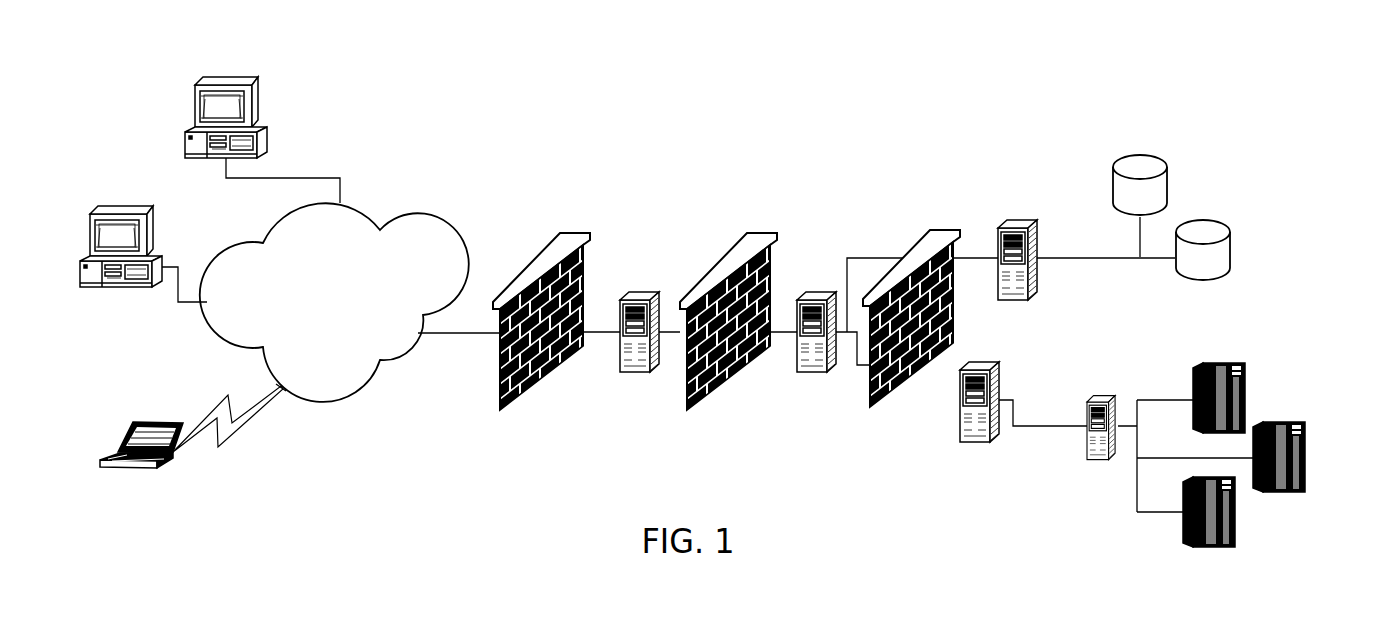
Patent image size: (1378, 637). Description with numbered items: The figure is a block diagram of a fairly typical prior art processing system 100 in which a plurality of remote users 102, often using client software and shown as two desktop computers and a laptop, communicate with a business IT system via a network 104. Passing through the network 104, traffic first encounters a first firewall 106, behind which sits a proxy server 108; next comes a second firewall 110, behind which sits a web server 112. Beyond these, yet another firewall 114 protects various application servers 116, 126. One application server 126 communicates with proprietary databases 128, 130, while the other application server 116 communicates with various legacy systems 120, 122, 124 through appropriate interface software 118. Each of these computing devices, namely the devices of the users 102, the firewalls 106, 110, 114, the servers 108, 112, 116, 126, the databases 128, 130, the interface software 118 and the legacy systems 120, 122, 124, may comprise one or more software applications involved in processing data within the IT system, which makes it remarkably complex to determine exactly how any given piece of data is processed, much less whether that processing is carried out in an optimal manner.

The system 100 is at (768, 171).
The remote users 102 is at (225, 78).
The network 104 is at (416, 226).
The first firewall 106 is at (505, 410).
The proxy server 108 is at (640, 377).
The second firewall 110 is at (692, 408).
The web server 112 is at (817, 377).
The firewall 114 is at (880, 407).
The application server 116 is at (977, 443).
The interface software 118 is at (1103, 460).
The legacy system 120 is at (1217, 368).
The legacy system 122 is at (1277, 422).
The legacy system 124 is at (1207, 543).
The application server 126 is at (1015, 220).
The proprietary database 128 is at (1143, 152).
The proprietary database 130 is at (1208, 217).